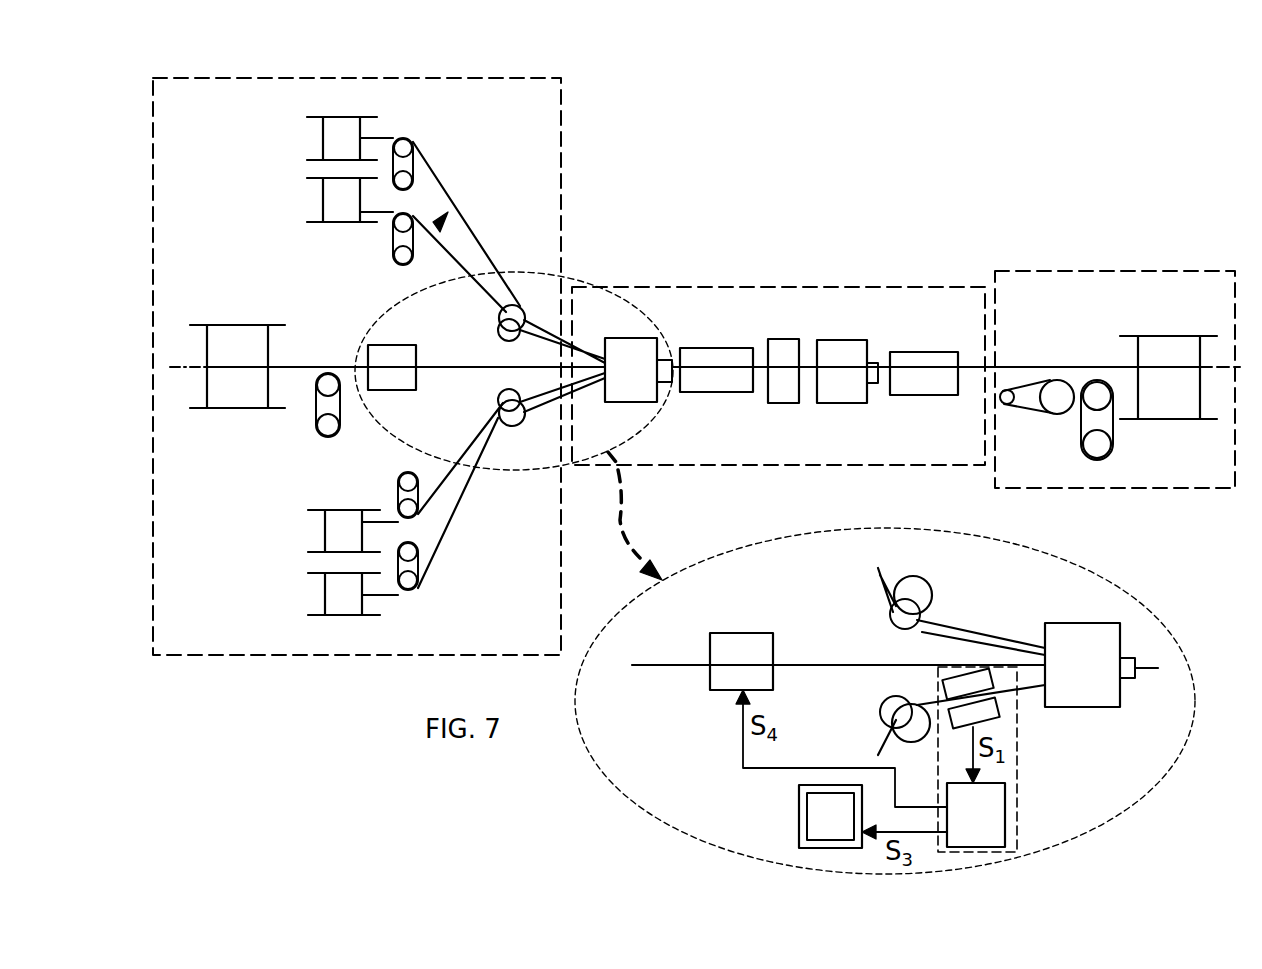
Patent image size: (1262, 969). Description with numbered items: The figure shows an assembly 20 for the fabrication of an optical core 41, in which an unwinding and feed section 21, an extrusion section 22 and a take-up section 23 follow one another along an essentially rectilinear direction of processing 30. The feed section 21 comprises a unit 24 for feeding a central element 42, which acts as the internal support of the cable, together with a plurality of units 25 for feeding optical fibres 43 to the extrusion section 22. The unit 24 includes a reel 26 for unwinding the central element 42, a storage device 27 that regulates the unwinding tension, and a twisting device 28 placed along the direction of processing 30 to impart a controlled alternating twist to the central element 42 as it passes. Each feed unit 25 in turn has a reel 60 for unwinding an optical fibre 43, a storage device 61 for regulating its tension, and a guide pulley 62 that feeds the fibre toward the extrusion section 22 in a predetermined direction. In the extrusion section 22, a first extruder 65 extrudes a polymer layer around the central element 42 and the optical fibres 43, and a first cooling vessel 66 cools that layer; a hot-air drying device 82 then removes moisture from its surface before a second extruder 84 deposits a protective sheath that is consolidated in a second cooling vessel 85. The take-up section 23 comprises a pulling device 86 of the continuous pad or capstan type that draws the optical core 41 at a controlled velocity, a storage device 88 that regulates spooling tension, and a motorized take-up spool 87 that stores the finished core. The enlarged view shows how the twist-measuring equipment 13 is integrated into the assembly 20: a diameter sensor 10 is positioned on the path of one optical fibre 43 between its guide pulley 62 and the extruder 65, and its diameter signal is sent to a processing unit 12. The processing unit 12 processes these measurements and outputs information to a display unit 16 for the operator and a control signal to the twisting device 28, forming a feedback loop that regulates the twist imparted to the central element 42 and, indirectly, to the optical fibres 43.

The diameter monitor 10 is at (994, 710).
The processing unit 12 is at (1005, 822).
The equipment 13 is at (1017, 760).
The display unit 16 is at (818, 812).
The assembly 20 is at (800, 185).
The unwinding and feed section 21 is at (551, 97).
The extrusion section 22 is at (708, 293).
The take-up section 23 is at (1078, 290).
The unit for feeding a central element 24 is at (256, 292).
The units for feeding optical fibres 25 is at (478, 225).
The reel 26 is at (238, 395).
The storage device 27 is at (320, 405).
The twisting device 28 is at (408, 355).
The direction of processing 30 is at (180, 365).
The optical core 41 is at (1122, 370).
The central element 42 is at (303, 365).
The optical fibres 43 is at (440, 255).
The reel 60 is at (335, 205).
The storage device 61 is at (410, 583).
The guide pulley 62 is at (512, 425).
The first extruder 65 is at (630, 385).
The first cooling vessel 66 is at (722, 380).
The hot-air drying device 82 is at (787, 353).
The second extruder 84 is at (842, 385).
The second cooling vessel 85 is at (934, 385).
The pulling device 86 is at (1030, 395).
The take-up spool 87 is at (1175, 412).
The storage device 88 is at (1097, 446).